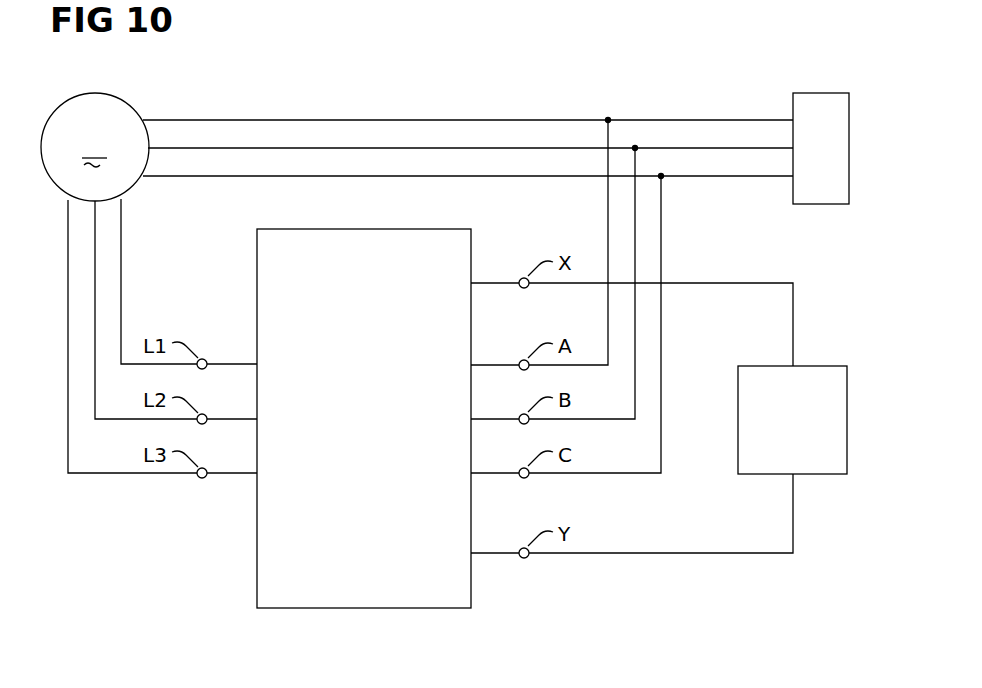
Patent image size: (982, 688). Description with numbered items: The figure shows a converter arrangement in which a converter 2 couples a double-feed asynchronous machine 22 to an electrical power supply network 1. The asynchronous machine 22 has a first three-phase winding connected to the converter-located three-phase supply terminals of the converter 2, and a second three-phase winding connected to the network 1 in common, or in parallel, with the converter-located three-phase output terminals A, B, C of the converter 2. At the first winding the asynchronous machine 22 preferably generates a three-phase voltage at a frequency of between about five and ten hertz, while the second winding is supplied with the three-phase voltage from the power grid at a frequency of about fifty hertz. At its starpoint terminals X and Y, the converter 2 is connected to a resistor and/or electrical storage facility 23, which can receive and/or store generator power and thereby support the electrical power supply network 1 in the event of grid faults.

The electrical power supply network 1 is at (822, 93).
The converter 2 is at (257, 558).
The double-feed asynchronous machine 22 is at (127, 98).
The resistor and/or electrical storage facility 23 is at (818, 475).